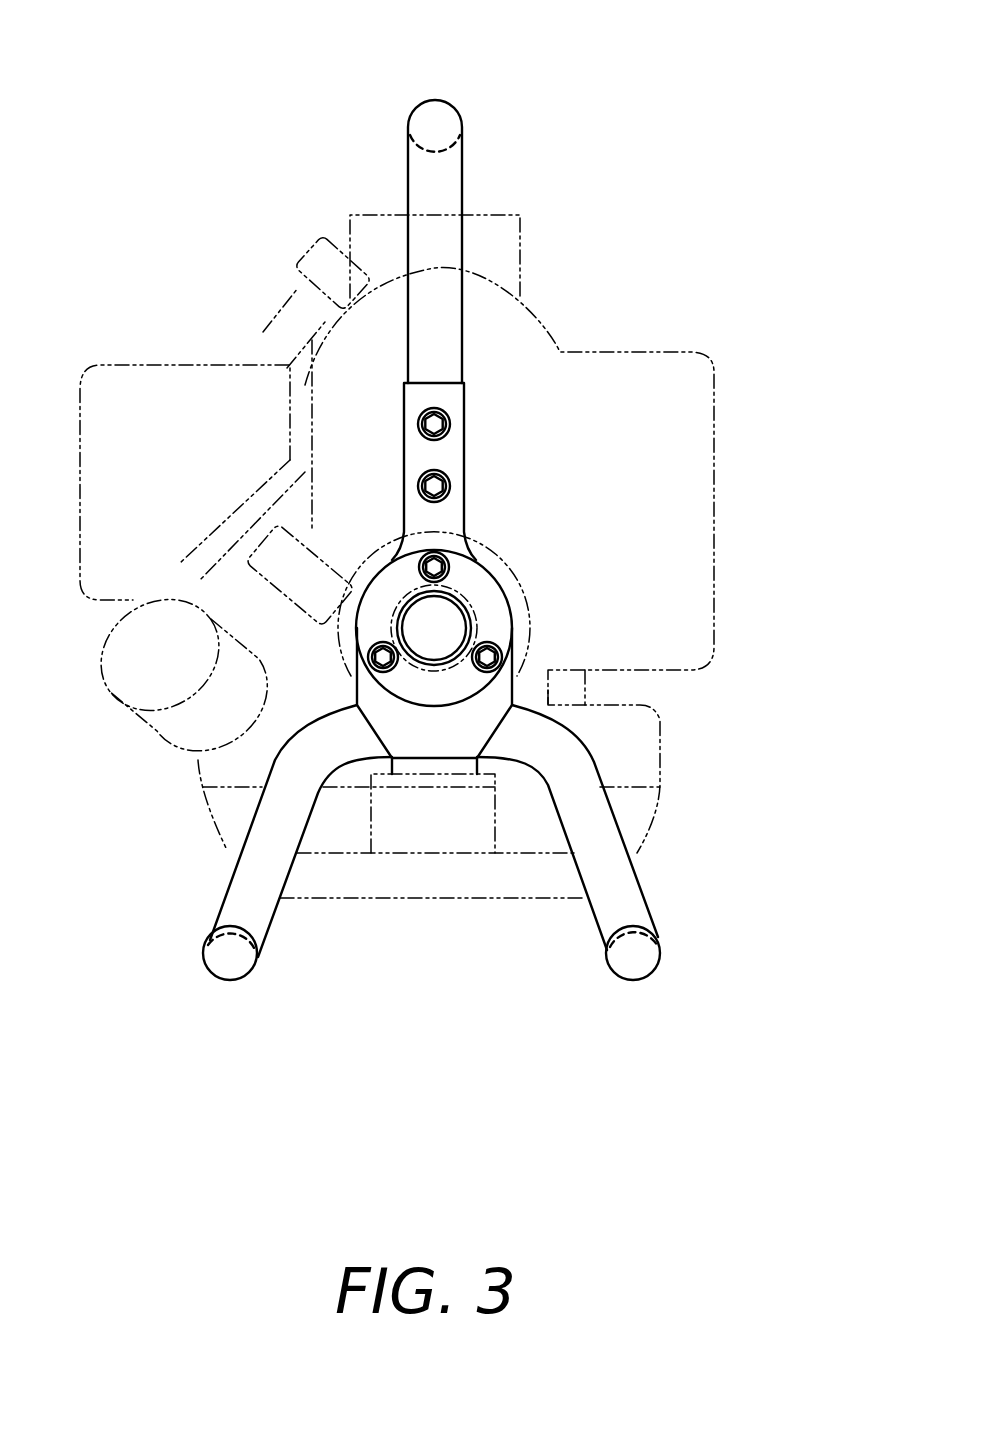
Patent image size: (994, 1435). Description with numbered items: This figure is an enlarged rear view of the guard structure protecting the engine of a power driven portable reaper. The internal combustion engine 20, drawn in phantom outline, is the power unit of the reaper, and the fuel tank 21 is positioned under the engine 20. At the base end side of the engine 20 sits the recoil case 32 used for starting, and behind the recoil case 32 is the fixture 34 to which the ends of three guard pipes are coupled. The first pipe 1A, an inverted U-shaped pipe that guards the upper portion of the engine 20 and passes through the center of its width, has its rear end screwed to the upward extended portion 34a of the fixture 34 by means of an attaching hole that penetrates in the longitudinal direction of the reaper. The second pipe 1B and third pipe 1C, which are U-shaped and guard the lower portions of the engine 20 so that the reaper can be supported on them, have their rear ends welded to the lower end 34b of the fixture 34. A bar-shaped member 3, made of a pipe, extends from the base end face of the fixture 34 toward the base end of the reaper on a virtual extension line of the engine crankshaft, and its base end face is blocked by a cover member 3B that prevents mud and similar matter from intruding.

The first pipe 1A is at (440, 117).
The second pipe 1B is at (247, 897).
The third pipe 1C is at (620, 900).
The bar-shaped member 3 is at (466, 612).
The cover member 3B is at (420, 642).
The internal combustion engine 20 is at (610, 372).
The fuel tank 21 is at (652, 742).
The recoil case 32 is at (500, 517).
The fixture 34 is at (480, 577).
The upward extended portion 34a is at (452, 452).
The lower end 34b is at (445, 735).